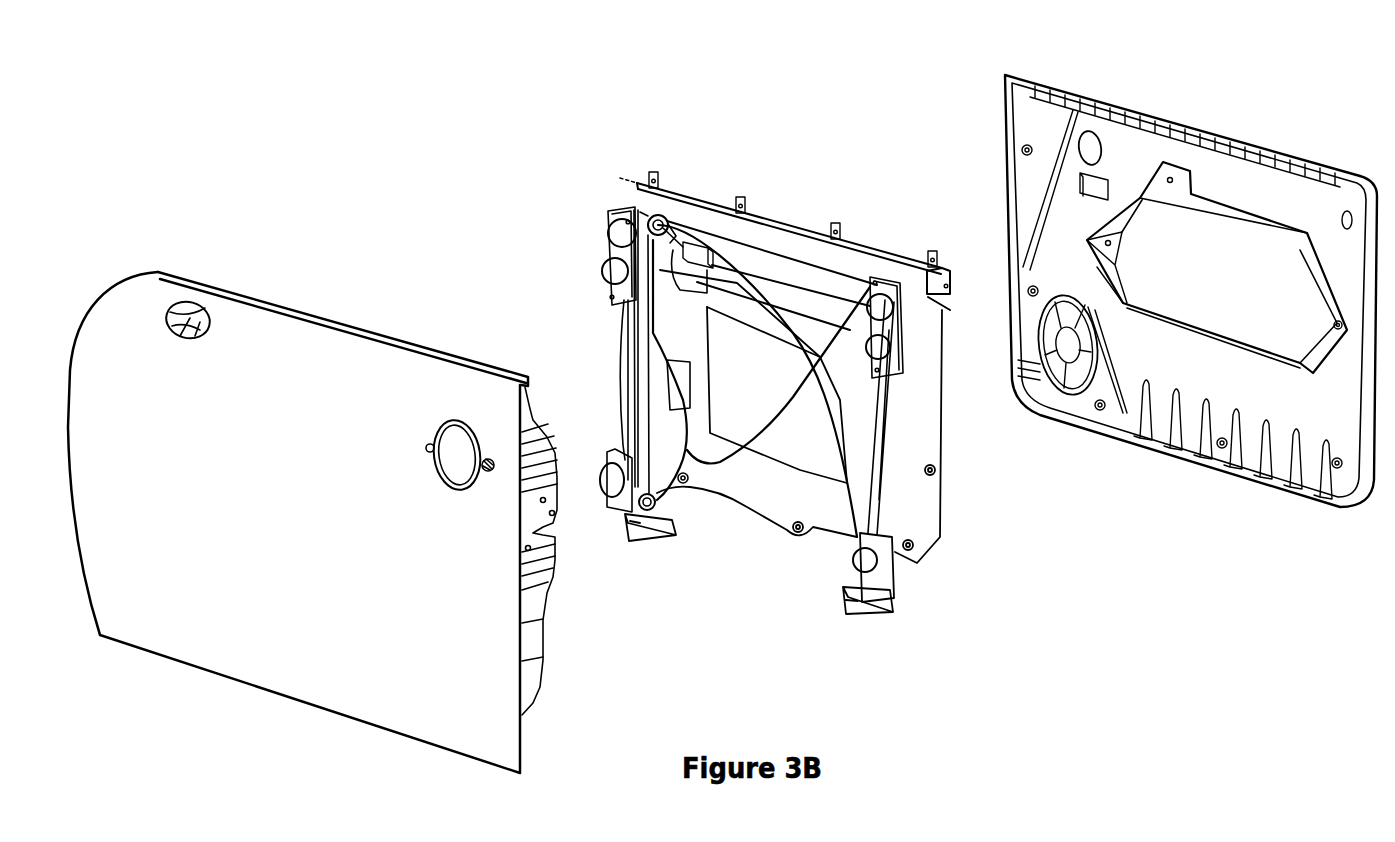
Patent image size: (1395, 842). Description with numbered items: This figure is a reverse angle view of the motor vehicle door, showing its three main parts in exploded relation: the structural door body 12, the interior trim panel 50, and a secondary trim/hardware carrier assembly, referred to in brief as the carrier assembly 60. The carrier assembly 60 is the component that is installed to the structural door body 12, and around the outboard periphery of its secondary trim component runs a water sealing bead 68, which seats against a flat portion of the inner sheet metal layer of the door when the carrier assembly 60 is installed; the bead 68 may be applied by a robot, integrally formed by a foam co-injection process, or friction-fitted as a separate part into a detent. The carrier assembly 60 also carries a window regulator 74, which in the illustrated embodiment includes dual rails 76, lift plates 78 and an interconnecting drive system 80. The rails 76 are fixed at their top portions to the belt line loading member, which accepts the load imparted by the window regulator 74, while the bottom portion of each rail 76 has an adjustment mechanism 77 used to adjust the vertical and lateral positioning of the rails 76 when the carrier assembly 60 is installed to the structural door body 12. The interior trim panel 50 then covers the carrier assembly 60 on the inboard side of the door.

The structural door body 12 is at (334, 286).
The interior trim panel 50 is at (1232, 125).
The carrier assembly 60 is at (800, 403).
The water sealing bead 68 is at (947, 477).
The window regulator 74 is at (661, 538).
The rails 76 is at (870, 453).
The adjustment mechanism 77 is at (880, 612).
The lift plates 78 is at (907, 292).
The interconnecting drive system 80 is at (762, 437).